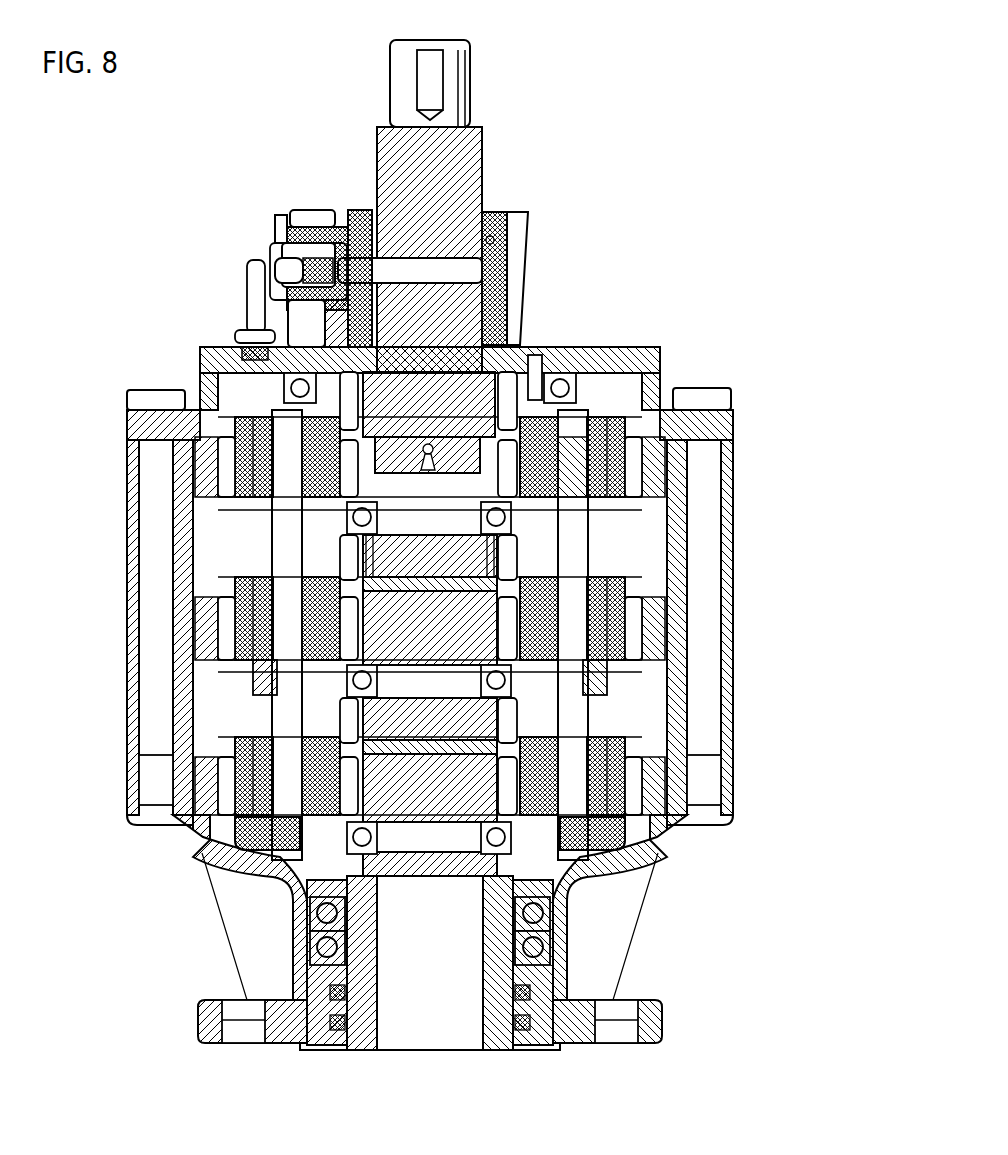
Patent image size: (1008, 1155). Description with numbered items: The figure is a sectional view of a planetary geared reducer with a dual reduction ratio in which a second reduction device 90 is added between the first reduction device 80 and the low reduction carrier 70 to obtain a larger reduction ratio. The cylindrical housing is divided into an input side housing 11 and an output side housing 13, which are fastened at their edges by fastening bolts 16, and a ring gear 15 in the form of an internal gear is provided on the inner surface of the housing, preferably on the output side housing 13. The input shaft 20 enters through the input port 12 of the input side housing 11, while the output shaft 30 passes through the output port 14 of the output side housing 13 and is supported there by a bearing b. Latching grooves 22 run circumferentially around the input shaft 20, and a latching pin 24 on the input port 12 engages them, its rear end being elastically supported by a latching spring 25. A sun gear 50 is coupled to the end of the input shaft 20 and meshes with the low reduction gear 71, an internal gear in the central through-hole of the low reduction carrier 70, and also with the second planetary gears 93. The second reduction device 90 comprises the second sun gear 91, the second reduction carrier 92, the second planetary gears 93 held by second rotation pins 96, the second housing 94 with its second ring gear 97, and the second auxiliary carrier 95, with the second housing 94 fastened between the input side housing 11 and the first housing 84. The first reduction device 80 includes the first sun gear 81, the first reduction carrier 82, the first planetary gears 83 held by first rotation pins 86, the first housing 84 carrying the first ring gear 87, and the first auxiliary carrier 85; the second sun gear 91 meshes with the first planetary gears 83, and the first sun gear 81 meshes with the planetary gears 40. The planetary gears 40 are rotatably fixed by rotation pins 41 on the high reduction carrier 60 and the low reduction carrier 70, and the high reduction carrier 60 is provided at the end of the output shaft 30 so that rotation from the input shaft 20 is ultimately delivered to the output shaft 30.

The input shaft 20 is at (465, 150).
The latching grooves 22 is at (410, 270).
The latching pin 24 is at (330, 265).
The latching spring 25 is at (290, 245).
The input port 12 is at (492, 242).
The sun gear 50 is at (455, 380).
The low reduction carrier 70 is at (615, 347).
The low reduction gear 71 is at (257, 322).
The bearing b is at (235, 340).
The input side housing 11 is at (245, 385).
The fastening bolts 16 is at (150, 395).
The second reduction device 90 is at (453, 453).
The second sun gear 91 is at (470, 620).
The second reduction carrier 92 is at (540, 545).
The second planetary gear 93 is at (240, 480).
The second housing 94 is at (725, 462).
The second auxiliary carrier 95 is at (580, 555).
The second rotation pin 96 is at (240, 450).
The second ring gear 97 is at (650, 470).
The first reduction device 80 is at (462, 661).
The first sun gear 81 is at (541, 723).
The first reduction carrier 82 is at (560, 690).
The first planetary gear 83 is at (245, 640).
The first housing 84 is at (725, 682).
The first auxiliary carrier 85 is at (590, 722).
The first rotation pin 86 is at (245, 615).
The first ring gear 87 is at (645, 600).
The planetary gear 40 is at (195, 865).
The rotation pin 41 is at (300, 848).
The ring gear 15 is at (190, 815).
The high reduction carrier 60 is at (590, 880).
The output side housing 13 is at (285, 845).
The output port 14 is at (240, 1000).
The output shaft 30 is at (370, 1040).